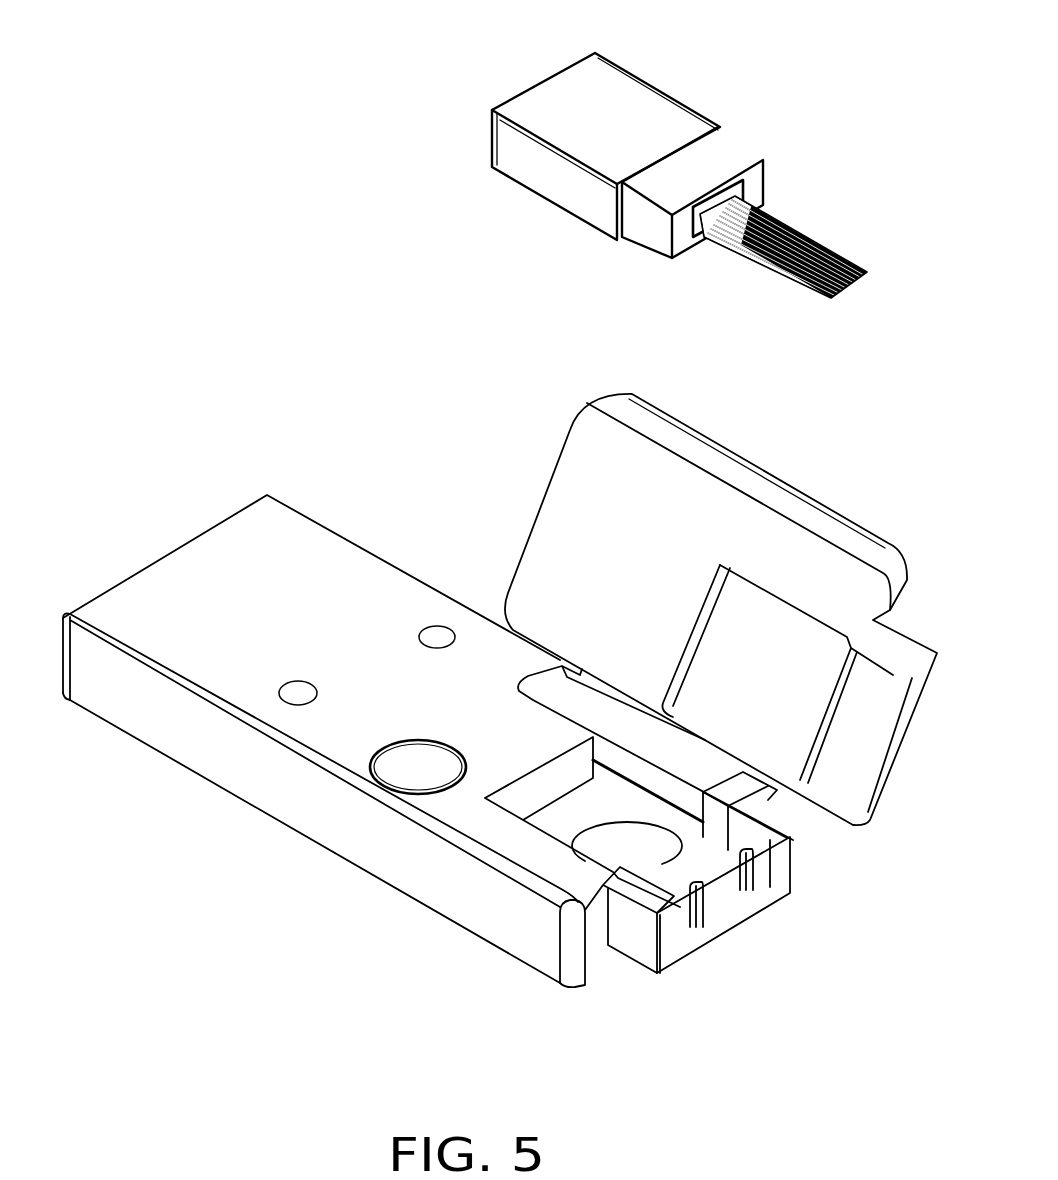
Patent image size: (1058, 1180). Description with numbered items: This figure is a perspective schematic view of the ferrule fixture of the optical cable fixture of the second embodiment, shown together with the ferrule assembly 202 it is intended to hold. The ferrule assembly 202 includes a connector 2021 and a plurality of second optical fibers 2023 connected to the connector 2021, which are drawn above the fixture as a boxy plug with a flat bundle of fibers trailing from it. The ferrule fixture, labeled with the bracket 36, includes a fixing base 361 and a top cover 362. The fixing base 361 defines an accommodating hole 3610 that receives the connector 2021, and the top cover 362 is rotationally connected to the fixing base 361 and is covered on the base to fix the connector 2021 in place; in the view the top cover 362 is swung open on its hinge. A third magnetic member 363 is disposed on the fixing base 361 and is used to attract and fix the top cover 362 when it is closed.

The ferrule assembly 202 is at (923, 58).
The connector 2021 is at (677, 118).
The second optical fibers 2023 is at (810, 245).
The holder assembly 36 is at (445, 368).
The fixing base 361 is at (343, 570).
The top cover 362 is at (572, 482).
The third magnetic member 363 is at (418, 765).
The accommodating hole 3610 is at (612, 850).